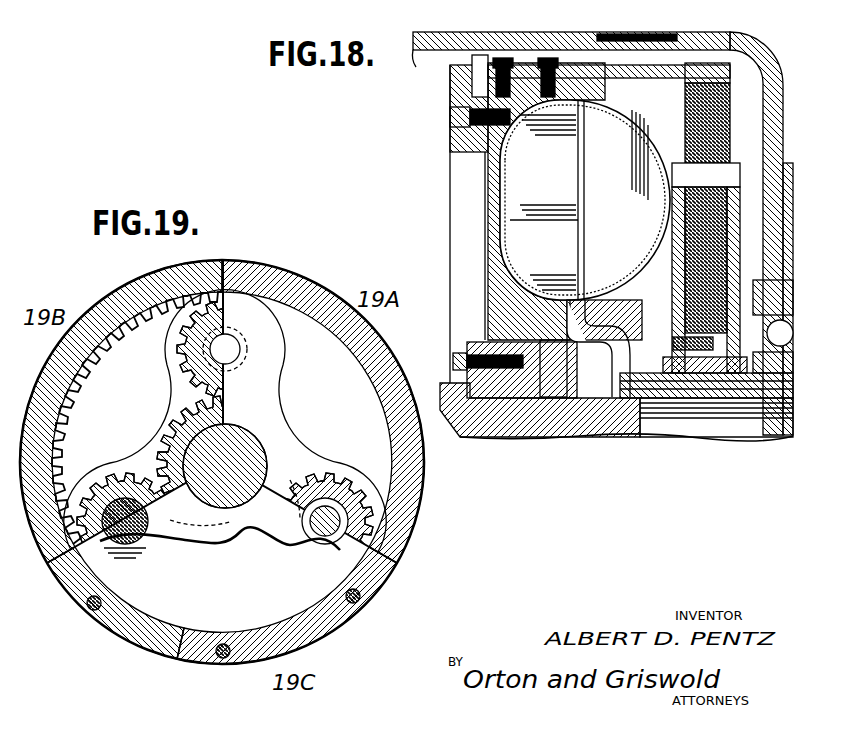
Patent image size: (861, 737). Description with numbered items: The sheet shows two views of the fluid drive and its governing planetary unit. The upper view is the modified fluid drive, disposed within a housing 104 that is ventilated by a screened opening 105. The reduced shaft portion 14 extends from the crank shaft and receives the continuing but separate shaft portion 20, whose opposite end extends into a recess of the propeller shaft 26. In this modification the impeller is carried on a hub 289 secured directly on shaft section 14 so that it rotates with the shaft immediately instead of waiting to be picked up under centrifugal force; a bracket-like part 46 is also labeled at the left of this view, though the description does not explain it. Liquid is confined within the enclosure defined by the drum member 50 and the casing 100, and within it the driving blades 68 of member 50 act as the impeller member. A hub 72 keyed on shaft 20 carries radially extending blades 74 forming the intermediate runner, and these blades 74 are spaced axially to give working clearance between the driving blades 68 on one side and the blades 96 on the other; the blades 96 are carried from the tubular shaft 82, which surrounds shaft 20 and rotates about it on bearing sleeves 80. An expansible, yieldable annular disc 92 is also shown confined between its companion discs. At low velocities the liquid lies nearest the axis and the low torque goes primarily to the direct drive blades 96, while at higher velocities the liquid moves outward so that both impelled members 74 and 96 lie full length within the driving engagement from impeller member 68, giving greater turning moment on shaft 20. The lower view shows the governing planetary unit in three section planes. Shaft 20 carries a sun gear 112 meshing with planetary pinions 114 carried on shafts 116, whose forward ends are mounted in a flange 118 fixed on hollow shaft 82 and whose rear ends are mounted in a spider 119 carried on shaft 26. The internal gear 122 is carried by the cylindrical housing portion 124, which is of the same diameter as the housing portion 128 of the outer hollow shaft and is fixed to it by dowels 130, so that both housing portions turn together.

In FIG. 18, the screened opening 105 is at (662, 24).
In FIG. 18, the housing 104 is at (731, 32).
In FIG. 18, the mounting bracket 46 is at (460, 88).
In FIG. 18, the casing 100 is at (634, 108).
In FIG. 18, the expansible yieldable annular disc 92 is at (730, 94).
In FIG. 18, the member 50 is at (492, 162).
In FIG. 18, the blades 74 is at (552, 200).
In FIG. 18, the blades 68 is at (585, 200).
In FIG. 18, the blades 96 is at (544, 255).
In FIG. 18, the hub 289 is at (528, 345).
In FIG. 18, the hub 72 is at (588, 357).
In FIG. 18, the shaft portion 14 is at (482, 428).
In FIG. 18, the tubular shaft 82 is at (713, 386).
In FIG. 19, the tubular shaft 82 is at (212, 512).
In FIG. 18, the shaft portion 20 is at (750, 426).
In FIG. 19, the shaft portion 20 is at (197, 523).
In FIG. 19, the cylindrical housing portion 124 is at (127, 293).
In FIG. 19, the housing portion 128 is at (183, 657).
In FIG. 19, the dowels 130 is at (368, 597).
In FIG. 19, the internal gear 122 is at (92, 380).
In FIG. 19, the sun gear 112 is at (167, 423).
In FIG. 19, the propeller shaft 26 is at (257, 447).
In FIG. 19, the bearing sleeves 80 is at (228, 532).
In FIG. 19, the planetary pinions 114 is at (122, 474).
In FIG. 19, the shafts 116 is at (232, 349).
In FIG. 19, the flange 118 is at (125, 556).
In FIG. 19, the spider 119 is at (318, 477).